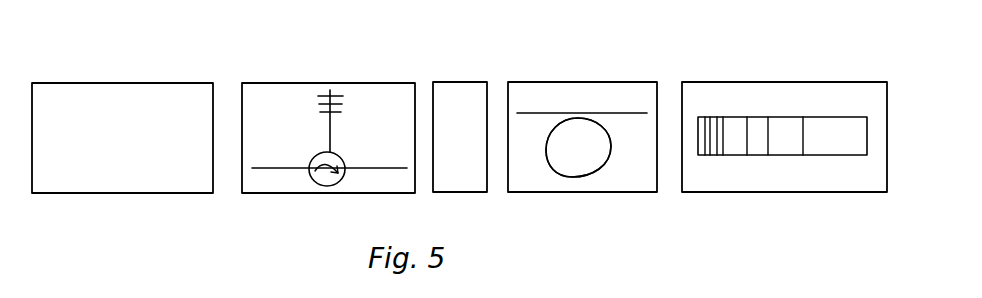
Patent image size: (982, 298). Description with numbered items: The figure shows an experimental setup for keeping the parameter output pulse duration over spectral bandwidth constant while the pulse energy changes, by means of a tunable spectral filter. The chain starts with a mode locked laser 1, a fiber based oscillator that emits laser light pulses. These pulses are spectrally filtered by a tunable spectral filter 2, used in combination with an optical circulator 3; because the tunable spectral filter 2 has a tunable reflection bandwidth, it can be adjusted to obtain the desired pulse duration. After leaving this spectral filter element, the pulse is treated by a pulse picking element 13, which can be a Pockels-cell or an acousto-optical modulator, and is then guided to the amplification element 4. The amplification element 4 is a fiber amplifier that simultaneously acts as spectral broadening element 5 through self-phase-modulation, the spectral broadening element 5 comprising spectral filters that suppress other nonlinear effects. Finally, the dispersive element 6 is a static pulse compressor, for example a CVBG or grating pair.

The mode locked laser 1 is at (97, 105).
The tunable spectral filter 2 is at (332, 92).
The optical circulator 3 is at (339, 153).
The pulse picking element 13 is at (448, 115).
The amplification element 4 is at (588, 137).
The spectral broadening element 5 is at (622, 55).
The dispersive element 6 is at (732, 135).